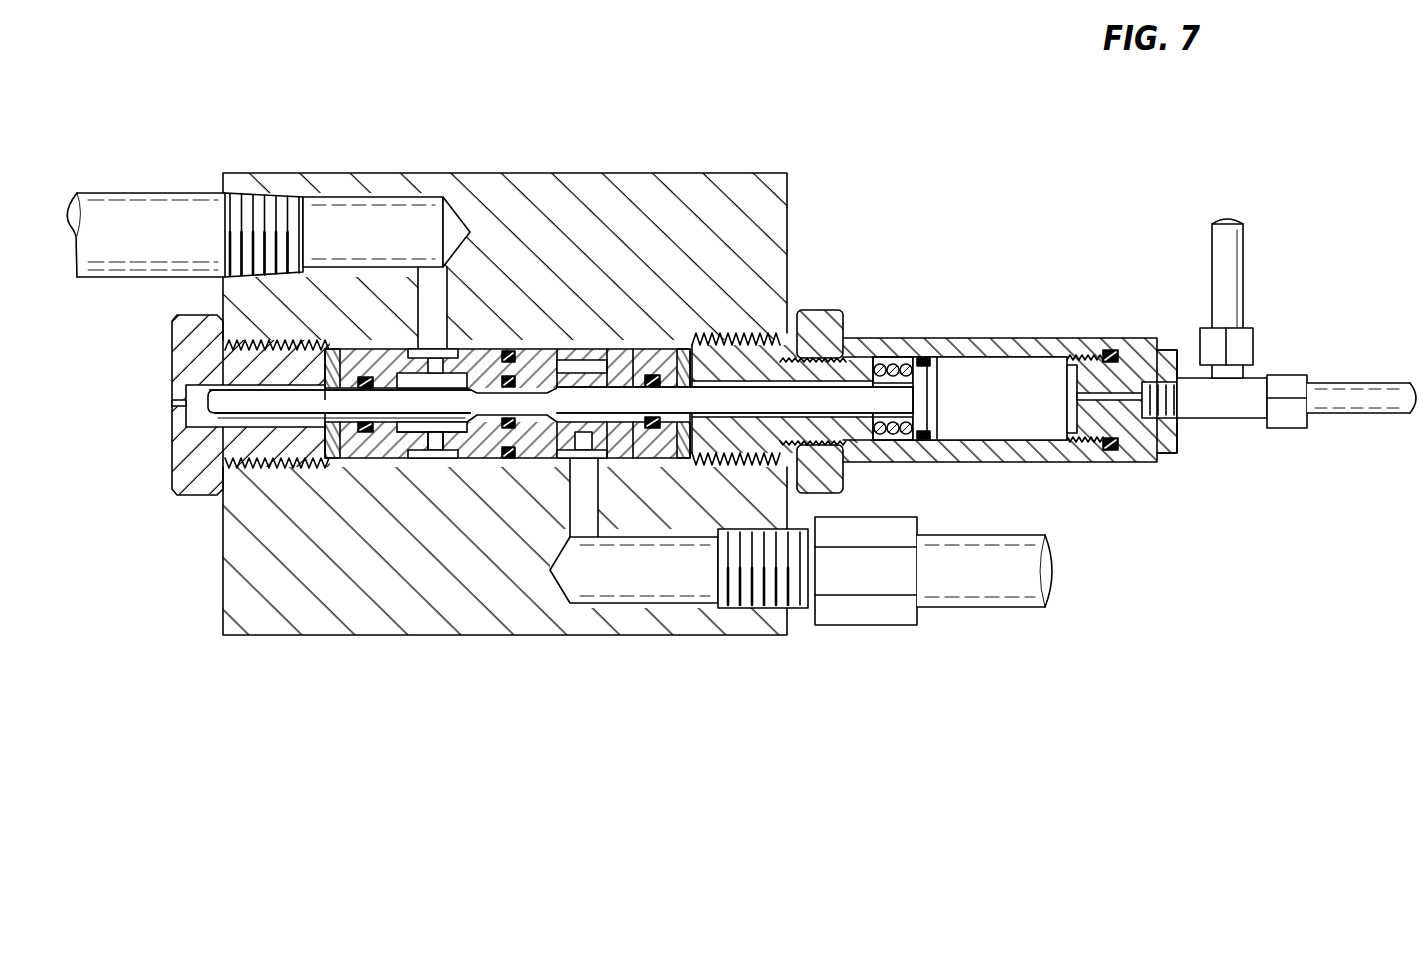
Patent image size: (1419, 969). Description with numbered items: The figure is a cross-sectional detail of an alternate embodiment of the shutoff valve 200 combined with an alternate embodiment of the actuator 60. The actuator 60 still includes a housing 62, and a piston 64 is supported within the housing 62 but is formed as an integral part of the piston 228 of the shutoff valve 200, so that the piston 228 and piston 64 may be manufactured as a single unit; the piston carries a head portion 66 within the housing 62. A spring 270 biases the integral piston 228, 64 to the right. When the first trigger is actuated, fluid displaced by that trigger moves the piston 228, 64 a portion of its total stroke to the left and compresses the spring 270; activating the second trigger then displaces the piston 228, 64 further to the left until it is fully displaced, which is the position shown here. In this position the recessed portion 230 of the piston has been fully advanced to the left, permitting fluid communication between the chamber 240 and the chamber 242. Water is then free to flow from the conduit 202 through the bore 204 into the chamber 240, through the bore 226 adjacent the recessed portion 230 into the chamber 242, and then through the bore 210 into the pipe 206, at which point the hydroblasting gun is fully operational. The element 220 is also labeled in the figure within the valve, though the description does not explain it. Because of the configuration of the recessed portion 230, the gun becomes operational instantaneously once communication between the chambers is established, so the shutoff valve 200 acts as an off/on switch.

The shutoff valve 200 is at (633, 173).
The conduit 202 is at (978, 590).
The bore 204 is at (640, 580).
The pipe 206 is at (146, 192).
The bore 210 is at (340, 224).
The seal 220 is at (517, 352).
The bore 226 is at (538, 387).
The piston 228 is at (737, 393).
The piston 64 is at (737, 393).
The recessed portion 230 is at (498, 422).
The chamber 240 is at (612, 383).
The chamber 242 is at (408, 383).
The spring 270 is at (880, 365).
The head portion 66 is at (930, 365).
The housing 62 is at (1015, 338).
The actuator 60 is at (1098, 464).